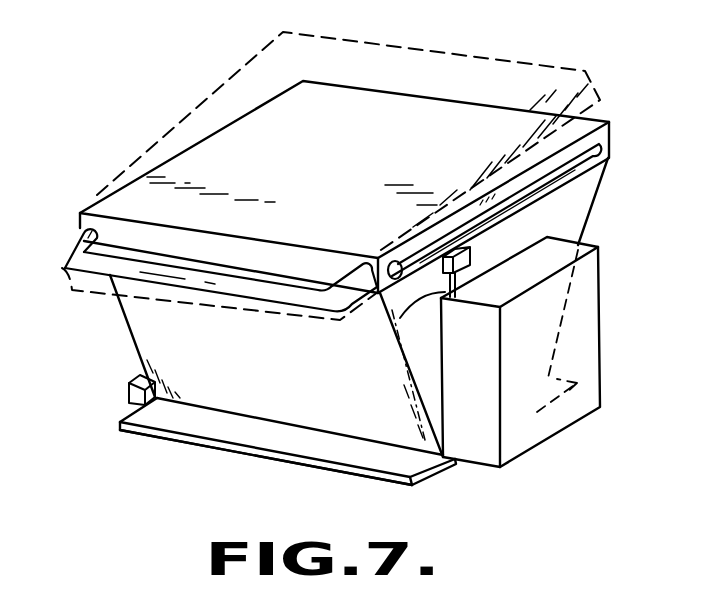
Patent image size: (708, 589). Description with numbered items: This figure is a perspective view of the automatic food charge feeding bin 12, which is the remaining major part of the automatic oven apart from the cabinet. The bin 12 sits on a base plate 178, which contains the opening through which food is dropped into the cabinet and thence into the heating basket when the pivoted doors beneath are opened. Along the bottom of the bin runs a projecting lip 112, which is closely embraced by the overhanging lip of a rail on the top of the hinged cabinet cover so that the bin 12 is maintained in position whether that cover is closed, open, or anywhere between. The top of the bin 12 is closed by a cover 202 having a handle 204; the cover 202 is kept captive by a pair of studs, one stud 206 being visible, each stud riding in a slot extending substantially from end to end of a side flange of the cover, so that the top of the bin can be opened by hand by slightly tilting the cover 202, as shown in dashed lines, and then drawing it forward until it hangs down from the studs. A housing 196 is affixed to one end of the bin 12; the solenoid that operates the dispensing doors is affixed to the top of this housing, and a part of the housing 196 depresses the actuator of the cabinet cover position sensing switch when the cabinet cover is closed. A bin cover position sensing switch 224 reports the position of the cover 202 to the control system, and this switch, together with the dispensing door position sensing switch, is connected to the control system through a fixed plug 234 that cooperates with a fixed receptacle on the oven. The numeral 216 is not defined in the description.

The automatic food charge feeding bin 12 is at (77, 313).
The cover 202 is at (503, 118).
The handle bar 216 is at (610, 118).
The stud 206 is at (397, 263).
The handle 204 is at (63, 252).
The bin cover position sensing switch 224 is at (400, 318).
The housing 196 is at (595, 322).
The fixed plug 234 is at (128, 395).
The lip 112 is at (242, 452).
The base plate 178 is at (377, 475).